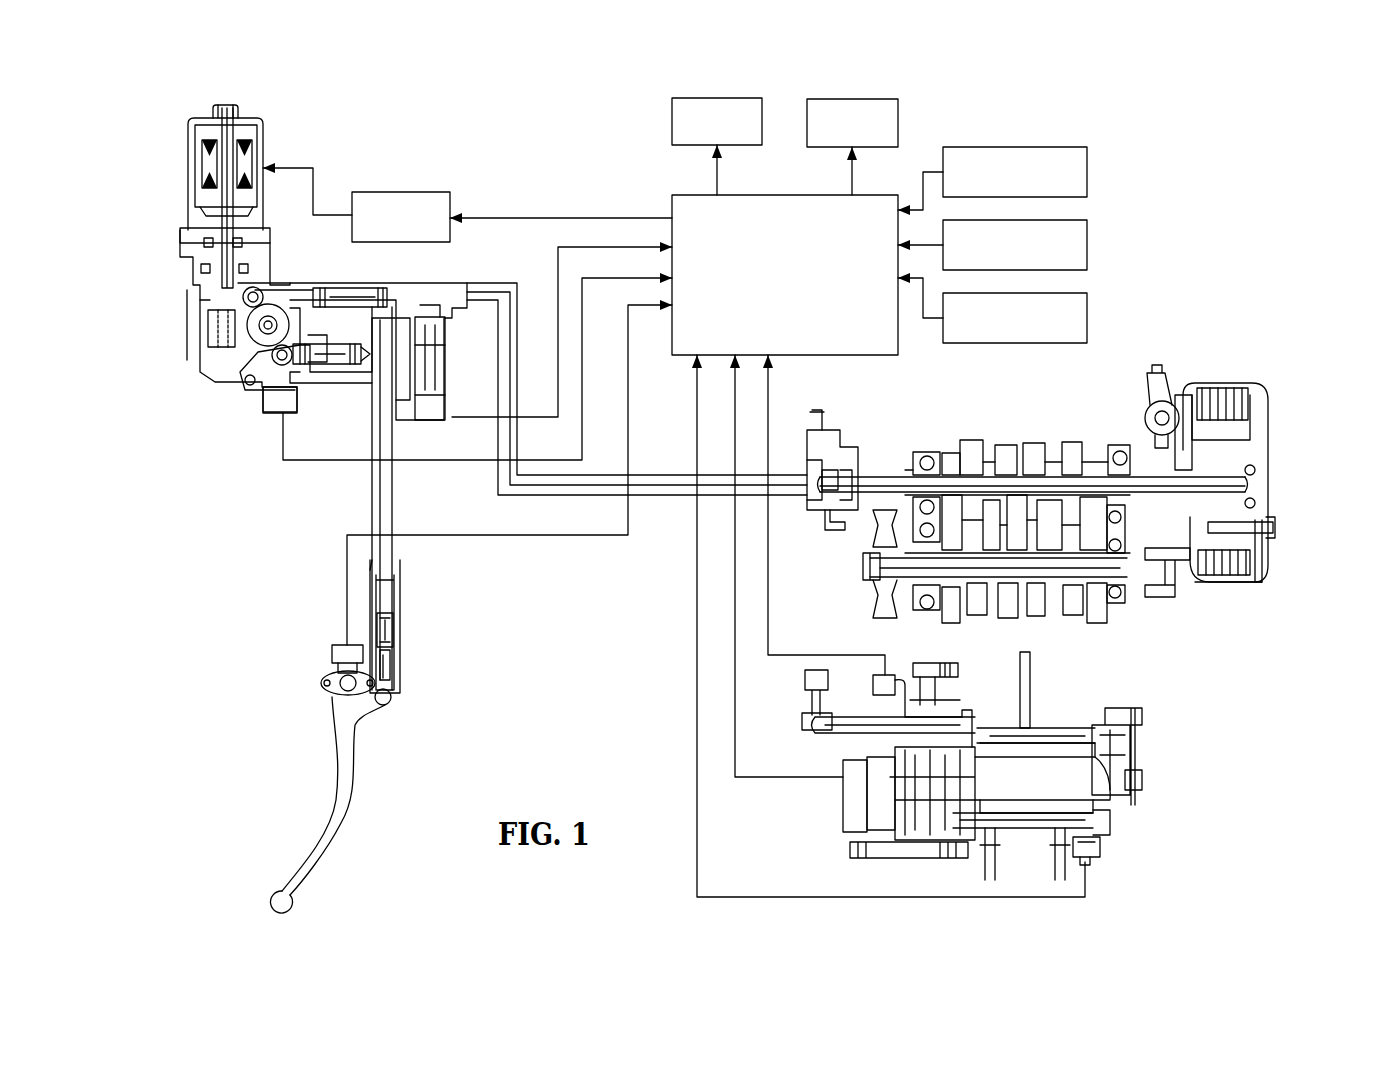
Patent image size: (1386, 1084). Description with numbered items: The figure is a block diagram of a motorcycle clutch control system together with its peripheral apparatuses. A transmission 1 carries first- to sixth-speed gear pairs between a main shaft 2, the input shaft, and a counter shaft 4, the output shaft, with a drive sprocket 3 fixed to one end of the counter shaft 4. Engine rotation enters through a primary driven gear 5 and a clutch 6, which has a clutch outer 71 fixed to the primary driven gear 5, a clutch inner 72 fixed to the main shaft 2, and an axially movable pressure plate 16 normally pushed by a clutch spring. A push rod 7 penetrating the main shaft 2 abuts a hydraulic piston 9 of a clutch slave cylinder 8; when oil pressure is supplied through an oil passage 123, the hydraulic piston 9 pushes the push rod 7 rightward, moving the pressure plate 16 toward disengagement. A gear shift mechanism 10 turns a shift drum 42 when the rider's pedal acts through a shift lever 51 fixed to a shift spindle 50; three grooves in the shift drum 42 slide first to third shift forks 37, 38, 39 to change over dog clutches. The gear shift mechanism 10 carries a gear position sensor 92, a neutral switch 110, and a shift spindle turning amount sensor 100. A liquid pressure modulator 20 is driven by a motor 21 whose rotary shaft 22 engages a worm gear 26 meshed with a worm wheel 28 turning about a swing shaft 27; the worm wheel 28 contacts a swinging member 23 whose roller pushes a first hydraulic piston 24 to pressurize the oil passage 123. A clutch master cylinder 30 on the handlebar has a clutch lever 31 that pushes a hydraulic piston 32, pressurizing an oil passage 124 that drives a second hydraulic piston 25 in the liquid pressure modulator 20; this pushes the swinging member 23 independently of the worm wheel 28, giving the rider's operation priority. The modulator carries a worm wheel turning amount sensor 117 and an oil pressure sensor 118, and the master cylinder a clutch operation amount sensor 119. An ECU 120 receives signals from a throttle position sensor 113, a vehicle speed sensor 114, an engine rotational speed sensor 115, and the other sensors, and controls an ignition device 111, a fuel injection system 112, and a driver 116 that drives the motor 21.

The transmission 1 is at (1020, 415).
The main shaft 2 is at (1097, 463).
The drive sprocket 3 is at (870, 553).
The counter shaft 4 is at (888, 585).
The primary driven gear 5 is at (1165, 378).
The clutch 6 is at (1273, 378).
The push rod 7 is at (885, 475).
The clutch slave cylinder 8 is at (845, 425).
The hydraulic piston 9 is at (820, 517).
The gear shift mechanism 10 is at (1149, 876).
The pressure plate 16 is at (1263, 562).
The liquid pressure modulator 20 is at (206, 423).
The motor 21 is at (268, 143).
The rotary shaft 22 is at (227, 297).
The swinging member 23 is at (243, 375).
The first hydraulic piston 24 is at (348, 298).
The second hydraulic piston 25 is at (335, 365).
The worm gear 26 is at (213, 315).
The swing shaft 27 is at (270, 322).
The worm wheel 28 is at (247, 323).
The clutch master cylinder 30 is at (419, 600).
The clutch lever 31 is at (328, 822).
The hydraulic piston 32 is at (385, 630).
The first shift fork 37 is at (1035, 690).
The second shift fork 38 is at (1055, 868).
The third shift fork 39 is at (985, 868).
The shift drum 42 is at (1110, 797).
The shift spindle 50 is at (845, 740).
The shift lever 51 is at (810, 705).
The clutch outer 71 is at (1212, 585).
The clutch inner 72 is at (1195, 558).
The gear position sensor 92 is at (843, 802).
The shift spindle turning amount sensor 100 is at (887, 673).
The neutral switch 110 is at (1100, 840).
The ignition device 111 is at (732, 145).
The fuel injection system 112 is at (866, 147).
The throttle position sensor 113 is at (1078, 197).
The vehicle speed sensor 114 is at (1078, 270).
The engine rotational speed sensor 115 is at (1078, 343).
The driver 116 is at (408, 243).
The worm wheel turning amount sensor 117 is at (285, 413).
The oil pressure sensor 118 is at (433, 418).
The clutch operation amount sensor 119 is at (332, 653).
The ECU 120 is at (878, 355).
The oil passage 123 is at (660, 497).
The oil passage 124 is at (370, 495).